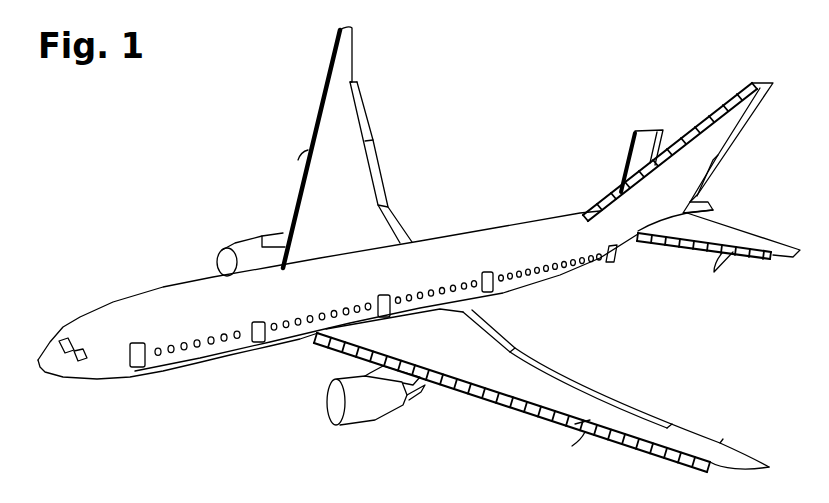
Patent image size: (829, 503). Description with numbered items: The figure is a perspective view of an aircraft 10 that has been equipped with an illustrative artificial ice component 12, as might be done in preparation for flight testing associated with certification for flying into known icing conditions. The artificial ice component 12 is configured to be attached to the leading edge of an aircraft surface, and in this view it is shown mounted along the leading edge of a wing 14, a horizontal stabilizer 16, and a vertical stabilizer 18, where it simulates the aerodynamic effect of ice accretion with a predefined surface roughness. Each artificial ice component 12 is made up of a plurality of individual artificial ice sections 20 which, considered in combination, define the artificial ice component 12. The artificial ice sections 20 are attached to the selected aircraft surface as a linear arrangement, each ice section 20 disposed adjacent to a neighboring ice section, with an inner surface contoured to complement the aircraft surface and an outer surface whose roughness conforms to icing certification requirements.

The aircraft 10 is at (117, 127).
The artificial ice component 12 is at (298, 85).
The wing 14 is at (356, 55).
The horizontal stabilizer 16 is at (650, 128).
The vertical stabilizer 18 is at (746, 121).
The artificial ice section 20 is at (299, 181).